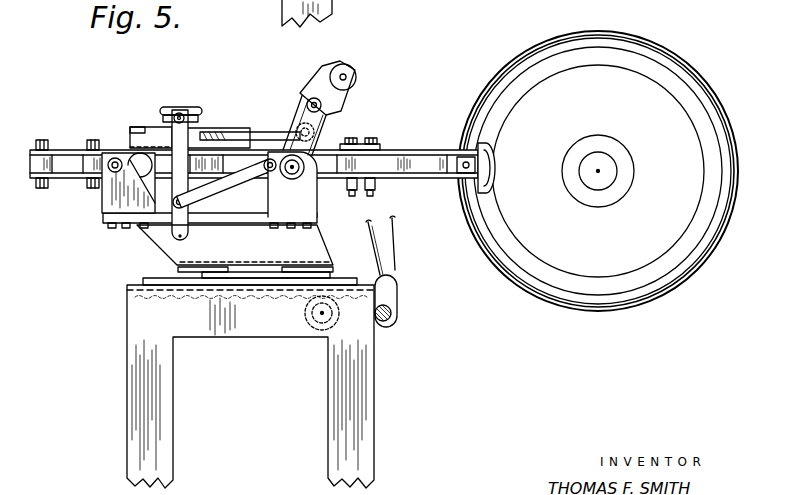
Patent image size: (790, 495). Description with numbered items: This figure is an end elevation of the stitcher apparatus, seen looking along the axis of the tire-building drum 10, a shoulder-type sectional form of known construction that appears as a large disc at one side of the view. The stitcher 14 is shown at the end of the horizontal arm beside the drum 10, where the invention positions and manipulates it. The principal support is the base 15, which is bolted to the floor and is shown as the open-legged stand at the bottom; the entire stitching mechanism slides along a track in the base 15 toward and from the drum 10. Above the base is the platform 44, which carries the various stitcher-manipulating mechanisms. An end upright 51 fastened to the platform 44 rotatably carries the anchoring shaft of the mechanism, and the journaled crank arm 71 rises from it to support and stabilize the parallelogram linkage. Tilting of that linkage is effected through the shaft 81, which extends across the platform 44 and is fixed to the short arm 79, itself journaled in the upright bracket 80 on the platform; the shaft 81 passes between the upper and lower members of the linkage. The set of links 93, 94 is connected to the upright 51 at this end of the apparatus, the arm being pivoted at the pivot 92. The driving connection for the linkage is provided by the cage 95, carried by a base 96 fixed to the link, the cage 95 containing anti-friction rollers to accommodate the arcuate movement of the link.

The tire-building drum 10 is at (557, 75).
The stitcher 14 is at (495, 160).
The base 15 is at (365, 382).
The platform 44 is at (250, 203).
The end upright 51 is at (310, 203).
The crank arm 71 is at (317, 120).
The short arm 79 is at (133, 157).
The upright bracket 80 is at (105, 197).
The shaft 81 is at (113, 158).
The pivot 92 is at (275, 172).
The link 93 is at (198, 128).
The link 94 is at (247, 170).
The cage 95 is at (173, 92).
The base 96 is at (157, 122).